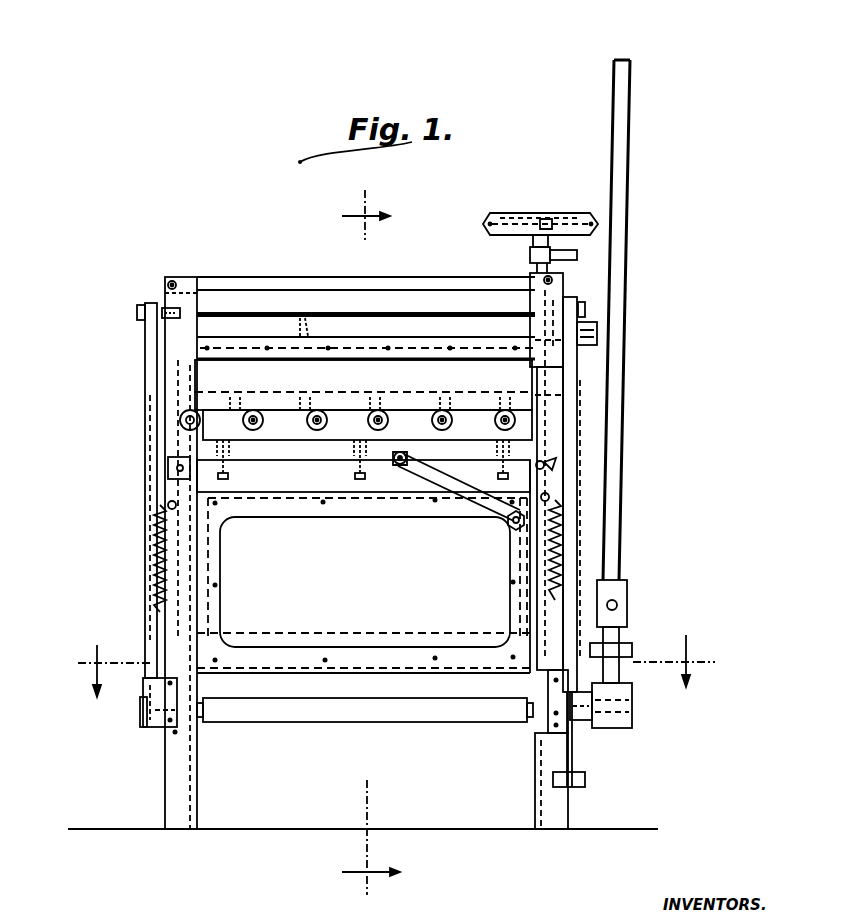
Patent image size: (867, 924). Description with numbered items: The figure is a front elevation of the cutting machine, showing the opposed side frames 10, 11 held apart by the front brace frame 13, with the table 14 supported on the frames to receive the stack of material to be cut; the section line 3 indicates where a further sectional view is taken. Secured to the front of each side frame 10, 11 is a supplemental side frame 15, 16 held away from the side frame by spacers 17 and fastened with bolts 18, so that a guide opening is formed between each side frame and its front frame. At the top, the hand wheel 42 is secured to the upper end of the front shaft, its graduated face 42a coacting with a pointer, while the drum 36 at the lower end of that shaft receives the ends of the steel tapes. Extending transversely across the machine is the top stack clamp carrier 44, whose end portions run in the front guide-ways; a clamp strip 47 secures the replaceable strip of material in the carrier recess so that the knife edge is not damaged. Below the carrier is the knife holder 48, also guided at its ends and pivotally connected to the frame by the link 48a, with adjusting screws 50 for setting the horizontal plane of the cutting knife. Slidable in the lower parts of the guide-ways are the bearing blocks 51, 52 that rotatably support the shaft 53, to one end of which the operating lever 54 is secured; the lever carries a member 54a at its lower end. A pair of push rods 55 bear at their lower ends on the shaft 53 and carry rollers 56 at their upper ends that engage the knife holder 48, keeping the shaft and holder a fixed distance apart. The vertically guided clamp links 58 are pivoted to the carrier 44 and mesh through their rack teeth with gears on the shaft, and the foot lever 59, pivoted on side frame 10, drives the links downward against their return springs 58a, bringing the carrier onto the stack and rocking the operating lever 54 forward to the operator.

The section line 3- 3 is at (371, 541).
The side frame 10 is at (550, 832).
The side frame 11 is at (182, 832).
The front brace frame 13 is at (305, 521).
The table 14 is at (393, 666).
The supplemental side frame 15 is at (555, 410).
The supplemental side frame 16 is at (165, 468).
The spacer 17 is at (247, 280).
The bolt 18 is at (172, 280).
The drum 36 is at (598, 322).
The hand wheel 42 is at (516, 214).
The face 42a is at (490, 222).
The carrier 44 is at (327, 302).
The clamp strip 47 is at (360, 362).
The knife holder 48 is at (410, 413).
The link 48a is at (440, 502).
The adjusting screw 50 is at (230, 476).
The bearing block 51 is at (578, 722).
The bearing block 52 is at (142, 730).
The shaft 53 is at (348, 710).
The operating lever 54 is at (630, 192).
The lever rod clamp 54a is at (627, 596).
The push rod 55 is at (150, 488).
The roller 56 is at (560, 462).
The vertically guided member 58 is at (155, 617).
The return spring 58a is at (520, 548).
The foot lever 59 is at (574, 768).